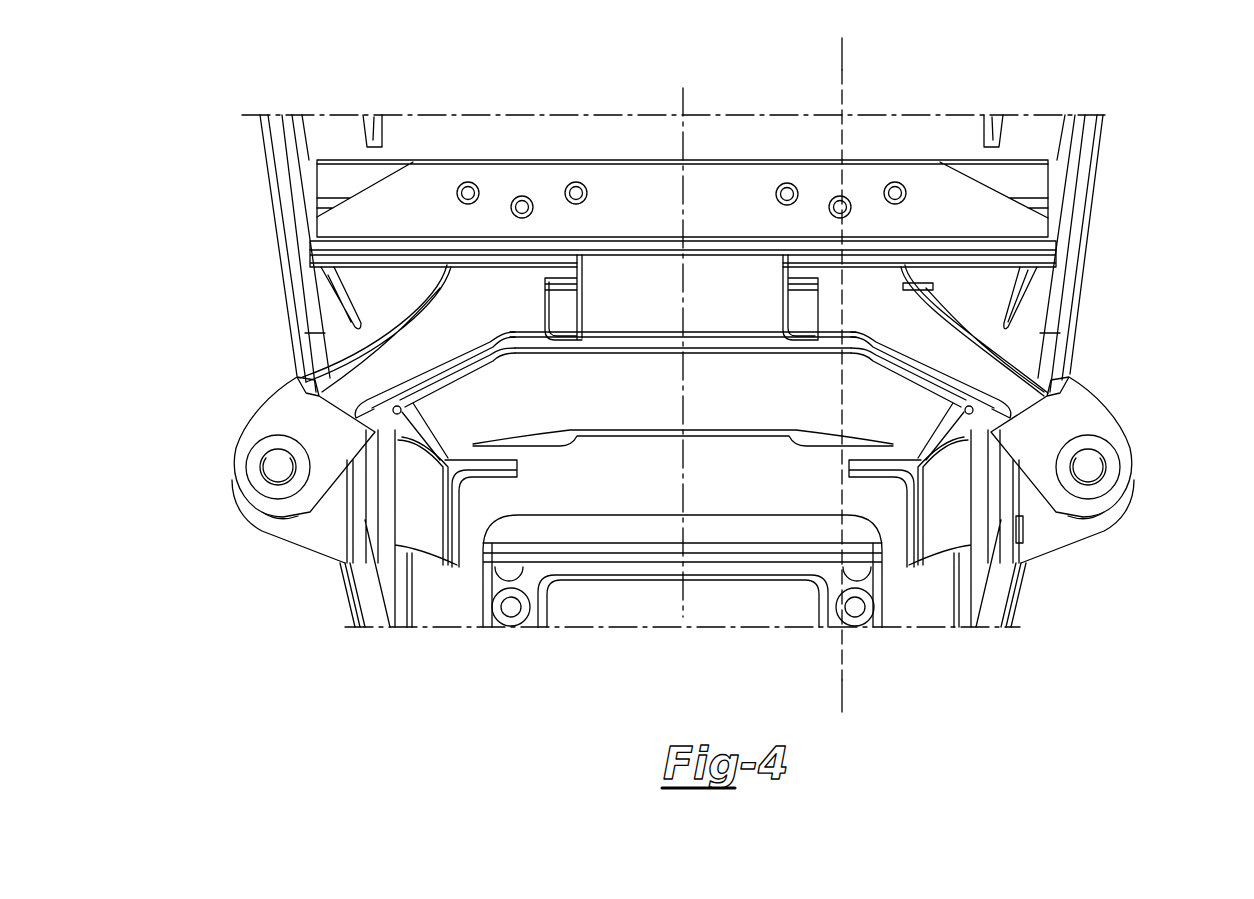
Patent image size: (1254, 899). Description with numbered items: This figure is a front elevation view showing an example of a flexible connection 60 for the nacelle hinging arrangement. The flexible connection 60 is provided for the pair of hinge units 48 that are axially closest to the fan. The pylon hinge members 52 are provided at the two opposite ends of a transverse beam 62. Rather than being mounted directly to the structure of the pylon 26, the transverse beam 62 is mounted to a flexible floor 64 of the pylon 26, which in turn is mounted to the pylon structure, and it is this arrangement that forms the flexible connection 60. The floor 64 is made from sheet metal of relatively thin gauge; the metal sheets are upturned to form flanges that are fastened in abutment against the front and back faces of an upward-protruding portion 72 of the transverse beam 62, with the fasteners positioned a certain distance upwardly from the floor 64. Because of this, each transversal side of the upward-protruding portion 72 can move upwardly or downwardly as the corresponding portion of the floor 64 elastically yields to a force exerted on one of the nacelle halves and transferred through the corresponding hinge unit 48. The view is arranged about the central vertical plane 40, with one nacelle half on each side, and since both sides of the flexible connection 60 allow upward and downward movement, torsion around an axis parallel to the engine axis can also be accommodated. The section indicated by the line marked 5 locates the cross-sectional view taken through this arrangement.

The pylon 26 is at (266, 146).
The flexible connection 60 is at (918, 188).
The flexible floor 64 is at (427, 242).
The upward-protruding portion 72 is at (803, 272).
The transverse beam 62 is at (953, 328).
The hinge units 48 is at (1078, 412).
The pylon hinge members 52 is at (1125, 465).
The central vertical plane 40 is at (680, 480).
The section line 5- 5 is at (860, 53).